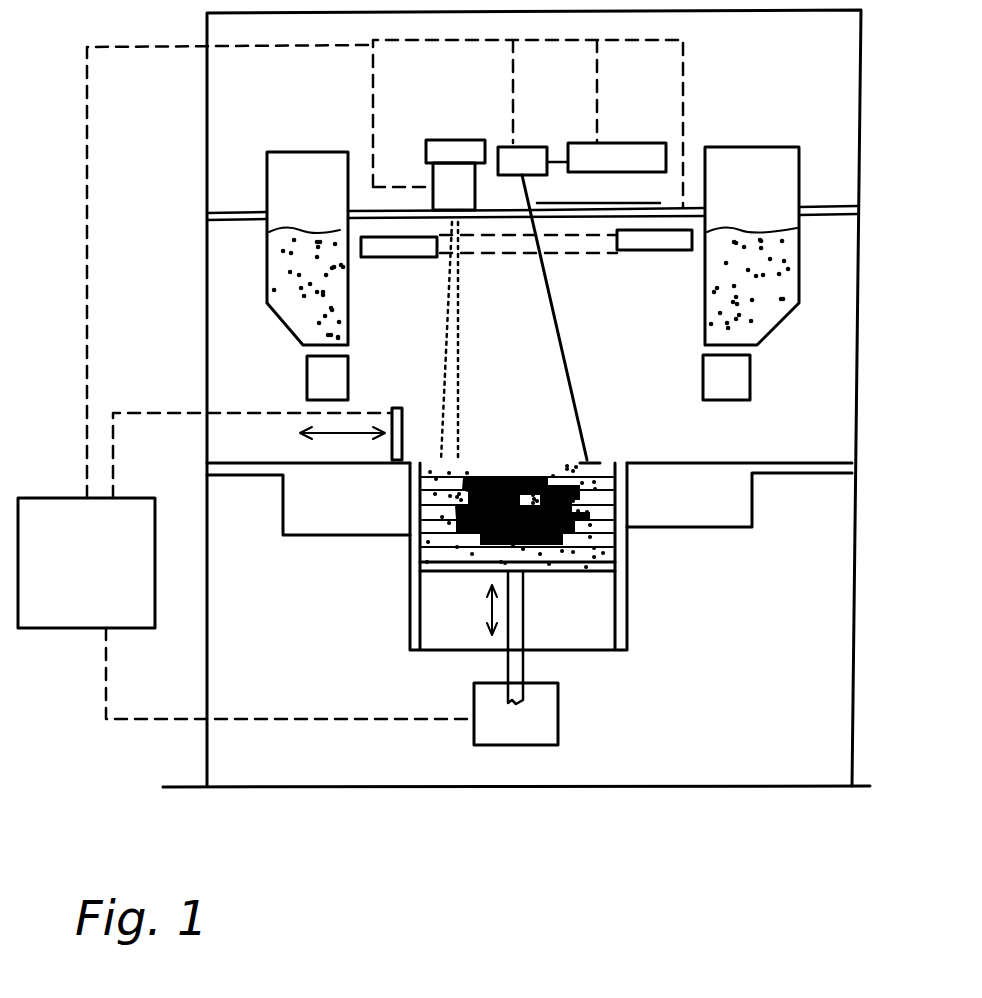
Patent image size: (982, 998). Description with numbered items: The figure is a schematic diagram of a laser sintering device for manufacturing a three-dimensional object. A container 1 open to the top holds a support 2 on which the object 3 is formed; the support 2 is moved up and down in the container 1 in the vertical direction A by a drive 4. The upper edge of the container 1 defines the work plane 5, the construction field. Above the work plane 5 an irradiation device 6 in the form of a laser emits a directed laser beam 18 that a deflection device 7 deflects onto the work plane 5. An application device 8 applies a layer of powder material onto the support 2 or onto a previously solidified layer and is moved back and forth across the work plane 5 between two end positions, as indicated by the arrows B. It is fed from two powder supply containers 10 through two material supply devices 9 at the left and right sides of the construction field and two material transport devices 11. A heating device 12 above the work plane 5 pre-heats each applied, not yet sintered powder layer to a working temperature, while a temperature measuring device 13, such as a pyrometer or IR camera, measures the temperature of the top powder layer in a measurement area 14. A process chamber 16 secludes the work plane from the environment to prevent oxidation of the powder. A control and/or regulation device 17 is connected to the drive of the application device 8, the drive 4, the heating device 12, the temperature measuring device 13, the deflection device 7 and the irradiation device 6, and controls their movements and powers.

The container 1 is at (403, 550).
The support 2 is at (558, 573).
The object 3 is at (510, 463).
The drive 4 is at (558, 718).
The work plane 5 is at (600, 460).
The irradiation device 6 is at (622, 155).
The deflection device 7 is at (532, 147).
The application device 8 is at (400, 408).
The material supply device 9 is at (307, 380).
The powder supply container 10 is at (298, 177).
The material transport device 11 is at (333, 510).
The heating device 12 is at (405, 257).
The temperature measuring device 13 is at (467, 183).
The measurement area 14 is at (447, 457).
The process chamber 16 is at (857, 333).
The control and/or regulation device 17 is at (92, 608).
The laser beam 18 is at (562, 325).